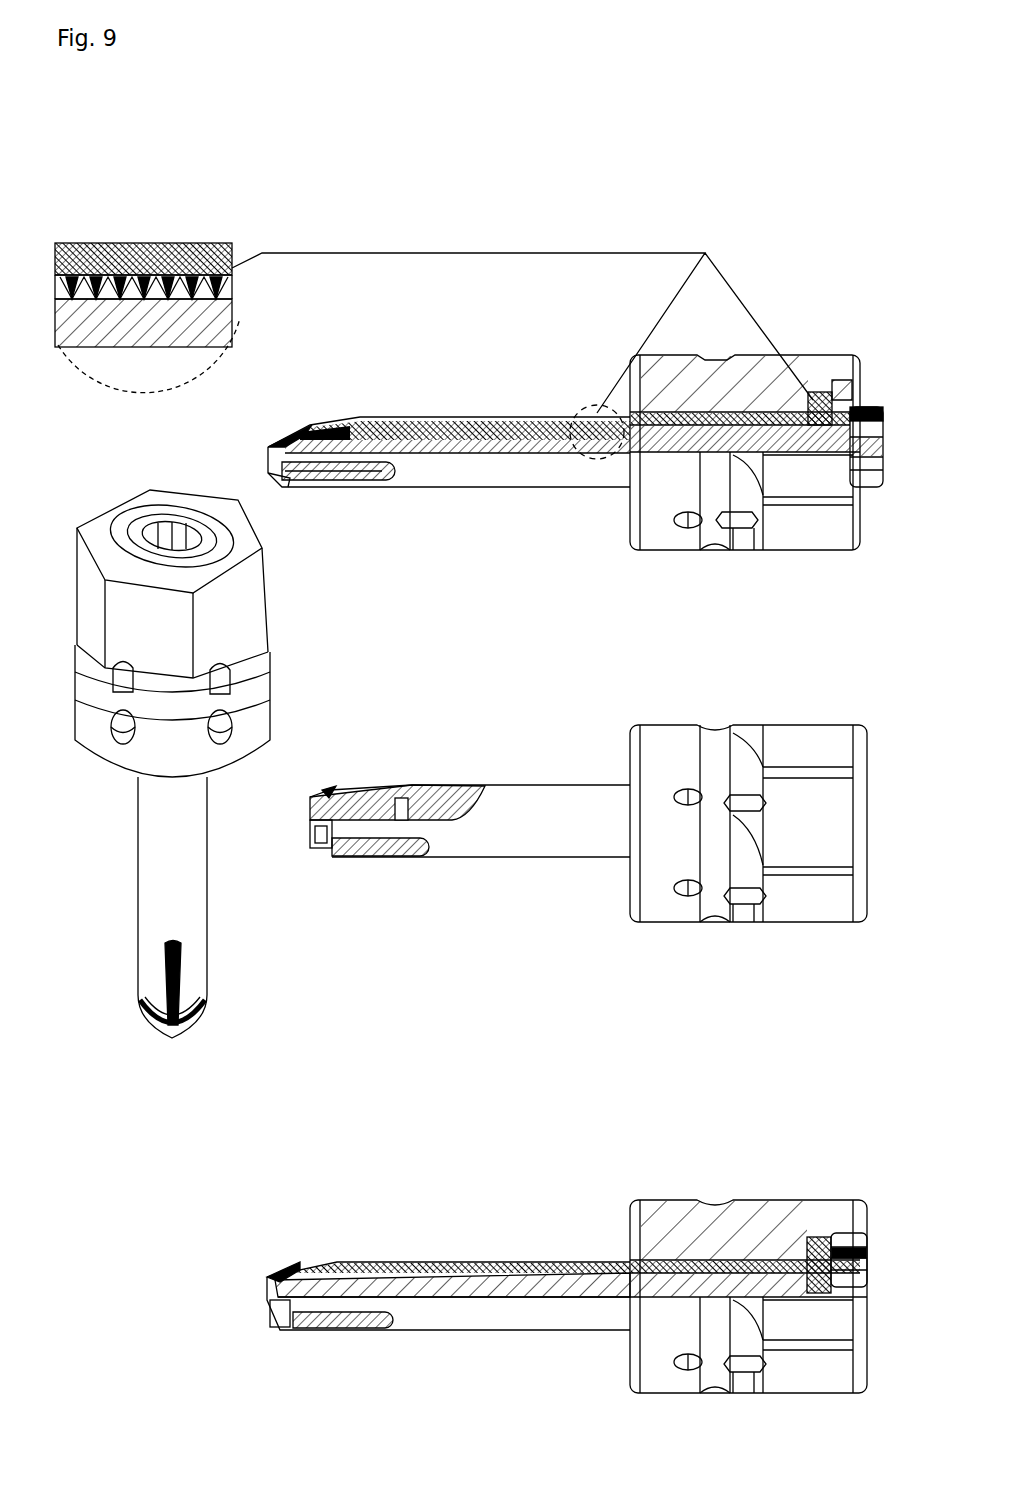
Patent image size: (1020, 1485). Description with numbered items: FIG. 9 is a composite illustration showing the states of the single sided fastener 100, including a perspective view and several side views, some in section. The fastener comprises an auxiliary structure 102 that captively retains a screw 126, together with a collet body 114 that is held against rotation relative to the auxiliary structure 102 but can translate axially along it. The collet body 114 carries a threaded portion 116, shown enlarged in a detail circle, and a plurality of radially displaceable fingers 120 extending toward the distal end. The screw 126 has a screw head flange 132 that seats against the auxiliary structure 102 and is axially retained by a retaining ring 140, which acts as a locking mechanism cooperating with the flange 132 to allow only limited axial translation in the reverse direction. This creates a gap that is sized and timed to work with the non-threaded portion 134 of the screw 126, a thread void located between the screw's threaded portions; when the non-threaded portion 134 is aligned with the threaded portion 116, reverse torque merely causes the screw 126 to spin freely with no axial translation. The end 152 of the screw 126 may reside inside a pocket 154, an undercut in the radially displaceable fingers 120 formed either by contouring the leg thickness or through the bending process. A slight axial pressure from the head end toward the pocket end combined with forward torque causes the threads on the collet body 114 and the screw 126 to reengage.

The single sided fastener 100 is at (438, 300).
The auxiliary structure 102 is at (783, 332).
The collet body 114 is at (502, 393).
The threaded portion 116 is at (183, 292).
The radially displaceable fingers 120 is at (341, 465).
The screw 126 is at (401, 440).
The screw head flange 132 is at (830, 397).
The non-threaded portion 134 is at (143, 283).
The retaining ring 140 is at (855, 397).
The end 152 is at (345, 436).
The pocket 154 is at (298, 432).